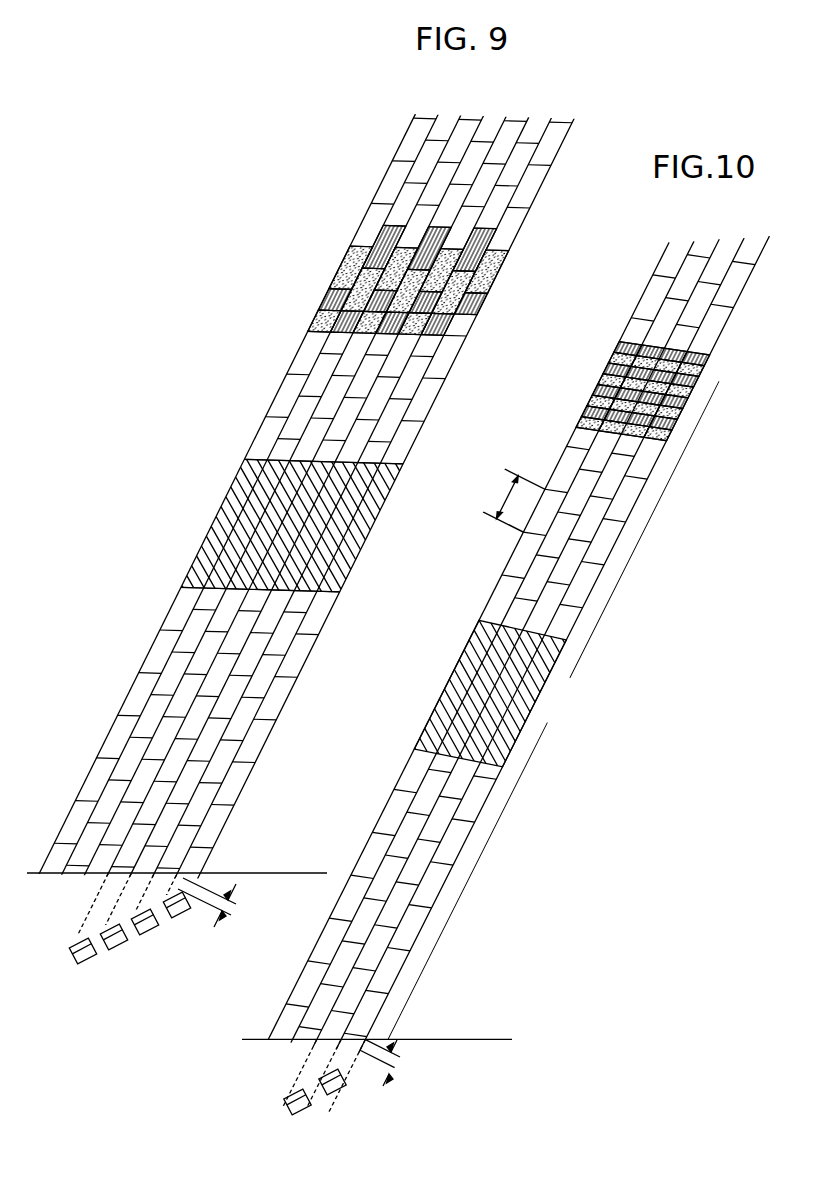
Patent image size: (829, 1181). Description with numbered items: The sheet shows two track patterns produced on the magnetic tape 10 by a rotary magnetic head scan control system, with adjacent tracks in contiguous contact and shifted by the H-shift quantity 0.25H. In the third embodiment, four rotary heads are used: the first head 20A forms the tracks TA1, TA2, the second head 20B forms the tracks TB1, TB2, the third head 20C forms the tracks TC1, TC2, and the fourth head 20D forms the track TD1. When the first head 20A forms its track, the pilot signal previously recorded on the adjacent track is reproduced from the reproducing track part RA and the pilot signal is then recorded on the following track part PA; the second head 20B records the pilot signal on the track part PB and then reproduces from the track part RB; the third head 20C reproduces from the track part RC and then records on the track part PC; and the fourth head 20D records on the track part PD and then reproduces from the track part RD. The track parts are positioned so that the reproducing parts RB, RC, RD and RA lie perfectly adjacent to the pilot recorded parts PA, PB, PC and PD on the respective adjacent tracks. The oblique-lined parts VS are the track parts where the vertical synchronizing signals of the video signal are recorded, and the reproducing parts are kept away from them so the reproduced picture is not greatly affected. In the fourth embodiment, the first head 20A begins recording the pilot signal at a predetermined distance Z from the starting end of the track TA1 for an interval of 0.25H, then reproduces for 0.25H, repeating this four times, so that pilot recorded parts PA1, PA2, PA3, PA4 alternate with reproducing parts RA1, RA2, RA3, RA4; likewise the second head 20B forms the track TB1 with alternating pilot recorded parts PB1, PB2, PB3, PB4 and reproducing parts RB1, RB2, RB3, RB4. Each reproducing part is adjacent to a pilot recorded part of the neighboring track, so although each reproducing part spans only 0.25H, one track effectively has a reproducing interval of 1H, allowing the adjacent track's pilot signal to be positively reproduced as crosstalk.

In FIG. 9, the track TC2 is at (424, 116).
In FIG. 9, the track TB2 is at (448, 116).
In FIG. 10, the track TB2 is at (673, 262).
In FIG. 9, the track TA2 is at (472, 116).
In FIG. 10, the track TA2 is at (702, 247).
In FIG. 9, the track TD1 is at (493, 125).
In FIG. 9, the track TC1 is at (518, 124).
In FIG. 9, the track TB1 is at (538, 127).
In FIG. 10, the track TB1 is at (722, 257).
In FIG. 9, the track TA1 is at (558, 129).
In FIG. 10, the track TA1 is at (748, 247).
In FIG. 9, the pilot signal recorded track part PA is at (349, 247).
In FIG. 9, the reproducing track part RA is at (334, 280).
In FIG. 9, the pilot signal recorded track part PD is at (335, 328).
In FIG. 9, the reproducing track part RD is at (395, 226).
In FIG. 9, the pilot signal recorded track part PC is at (450, 246).
In FIG. 9, the reproducing track part RB is at (503, 260).
In FIG. 9, the pilot signal recorded track part PB is at (460, 341).
In FIG. 9, the reproducing track part RC is at (439, 368).
In FIG. 9, the vertical synchronizing signal recorded part VS is at (374, 520).
In FIG. 10, the vertical synchronizing signal recorded part VS is at (492, 691).
In FIG. 9, the magnetic tape 10 is at (272, 874).
In FIG. 10, the magnetic tape 10 is at (478, 1040).
In FIG. 9, the H-shift quantity 0.25H is at (233, 903).
In FIG. 10, the H-shift quantity 0.25H is at (405, 1062).
In FIG. 10, the reproducing interval 1H is at (507, 499).
In FIG. 10, the predetermined distance Z is at (553, 710).
In FIG. 9, the first rotary magnetic head 20A is at (183, 912).
In FIG. 10, the first rotary magnetic head 20A is at (344, 1083).
In FIG. 9, the second rotary magnetic head 20B is at (147, 933).
In FIG. 10, the second rotary magnetic head 20B is at (285, 1094).
In FIG. 9, the third head 20C is at (120, 948).
In FIG. 9, the fourth head 20D is at (75, 945).
In FIG. 10, the reproducing track part RA4 is at (694, 386).
In FIG. 10, the pilot signal recorded track part PA4 is at (688, 397).
In FIG. 10, the reproducing track part RA3 is at (683, 408).
In FIG. 10, the pilot signal recorded track part PA3 is at (678, 418).
In FIG. 10, the reproducing track part RA2 is at (672, 429).
In FIG. 10, the pilot signal recorded track part PA2 is at (667, 440).
In FIG. 10, the reproducing track part RA1 is at (662, 451).
In FIG. 10, the pilot signal recorded track part PA1 is at (656, 461).
In FIG. 10, the reproducing track part RB4 is at (639, 350).
In FIG. 10, the pilot signal recorded track part PB4 is at (633, 361).
In FIG. 10, the reproducing track part RB3 is at (605, 368).
In FIG. 10, the pilot signal recorded track part PB3 is at (600, 379).
In FIG. 10, the reproducing track part RB2 is at (595, 390).
In FIG. 10, the pilot signal recorded track part PB2 is at (589, 401).
In FIG. 10, the reproducing track part RB1 is at (584, 412).
In FIG. 10, the pilot signal recorded track part PB1 is at (579, 423).